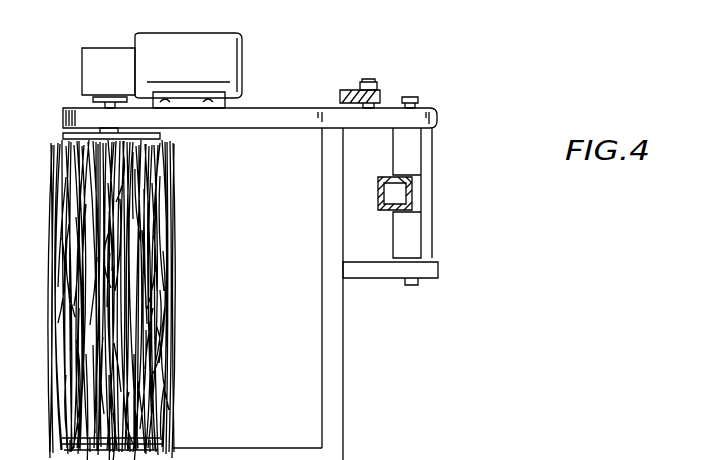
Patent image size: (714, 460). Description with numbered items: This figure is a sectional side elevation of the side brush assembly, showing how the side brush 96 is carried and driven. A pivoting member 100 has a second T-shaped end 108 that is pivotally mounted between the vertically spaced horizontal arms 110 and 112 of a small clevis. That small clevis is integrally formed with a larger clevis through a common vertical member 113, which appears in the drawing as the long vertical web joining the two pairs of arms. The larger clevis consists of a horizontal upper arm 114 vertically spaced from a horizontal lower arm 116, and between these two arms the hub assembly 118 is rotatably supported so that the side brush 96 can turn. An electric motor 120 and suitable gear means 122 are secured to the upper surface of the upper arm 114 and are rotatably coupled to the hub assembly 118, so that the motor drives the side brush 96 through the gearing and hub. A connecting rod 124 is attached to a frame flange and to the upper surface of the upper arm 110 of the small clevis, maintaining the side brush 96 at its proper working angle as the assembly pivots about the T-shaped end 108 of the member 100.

The side brush 96 is at (175, 255).
The member 100 is at (398, 212).
The second T-shaped end 108 is at (428, 202).
The horizontal arm 110 is at (428, 107).
The horizontal arm 112 is at (430, 280).
The common vertical member 113 is at (322, 236).
The horizontal upper arm 114 is at (205, 128).
The horizontal lower arm 116 is at (233, 448).
The hub assembly 118 is at (65, 136).
The electric motor 120 is at (205, 43).
The gear means 122 is at (106, 55).
The connecting rod 124 is at (349, 88).